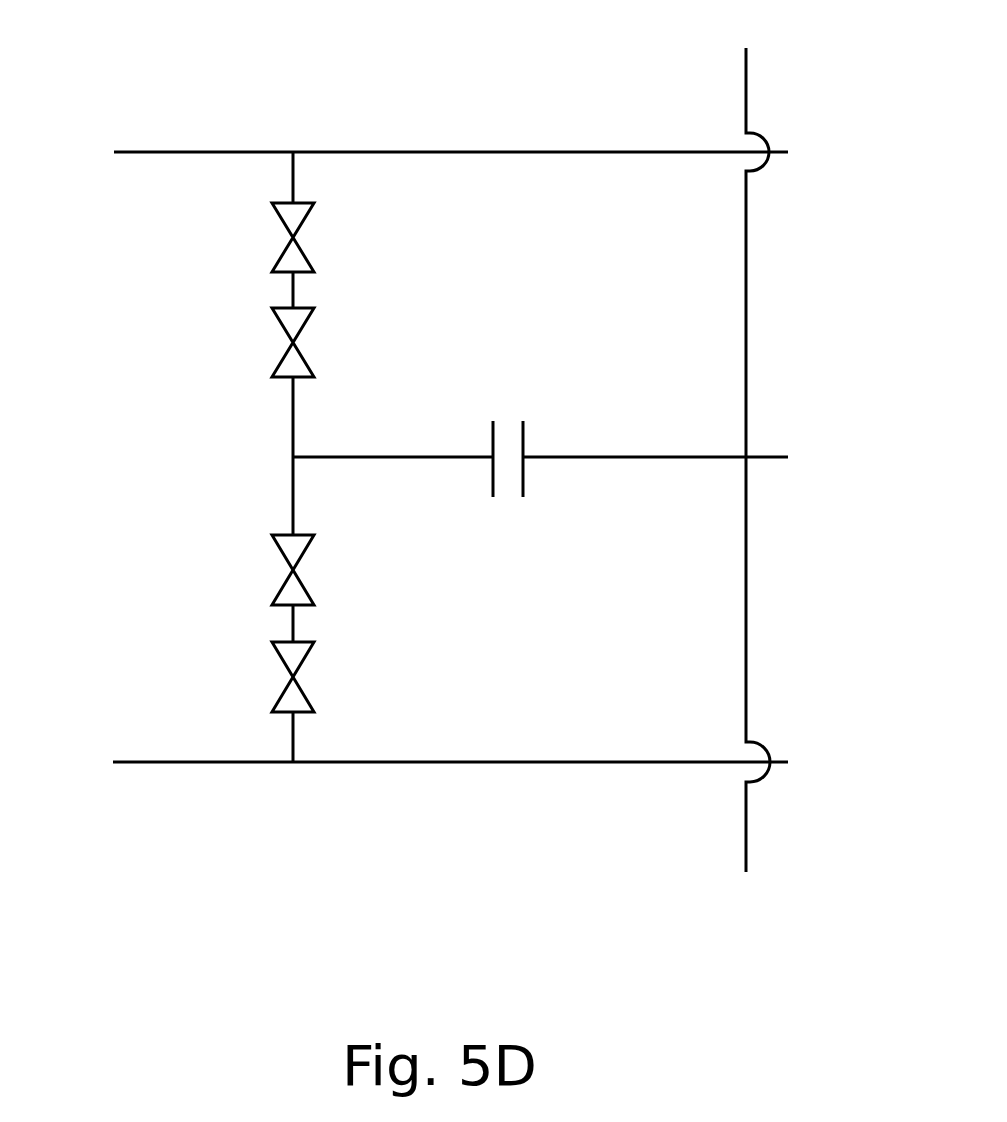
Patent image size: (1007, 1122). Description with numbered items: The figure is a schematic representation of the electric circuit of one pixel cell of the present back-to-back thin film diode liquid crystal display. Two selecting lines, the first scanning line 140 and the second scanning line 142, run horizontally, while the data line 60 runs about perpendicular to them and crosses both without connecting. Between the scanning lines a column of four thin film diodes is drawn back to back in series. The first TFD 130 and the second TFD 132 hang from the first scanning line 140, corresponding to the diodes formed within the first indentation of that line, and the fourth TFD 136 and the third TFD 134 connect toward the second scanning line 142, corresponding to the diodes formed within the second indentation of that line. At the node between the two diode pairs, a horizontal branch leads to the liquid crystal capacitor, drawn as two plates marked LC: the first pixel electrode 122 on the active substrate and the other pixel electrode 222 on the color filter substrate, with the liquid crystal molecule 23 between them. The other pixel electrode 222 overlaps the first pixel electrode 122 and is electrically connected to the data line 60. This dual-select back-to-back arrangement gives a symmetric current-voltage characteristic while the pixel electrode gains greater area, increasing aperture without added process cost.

The data line 60 is at (746, 90).
The first scanning line 140 is at (173, 152).
The second scanning line 142 is at (172, 762).
The first TFD 130 is at (272, 238).
The second TFD 132 is at (272, 343).
The fourth TFD 136 is at (272, 571).
The third TFD 134 is at (272, 678).
The liquid crystal molecule 23 is at (508, 430).
The first pixel electrode 122 is at (490, 434).
The other pixel electrode 222 is at (526, 434).